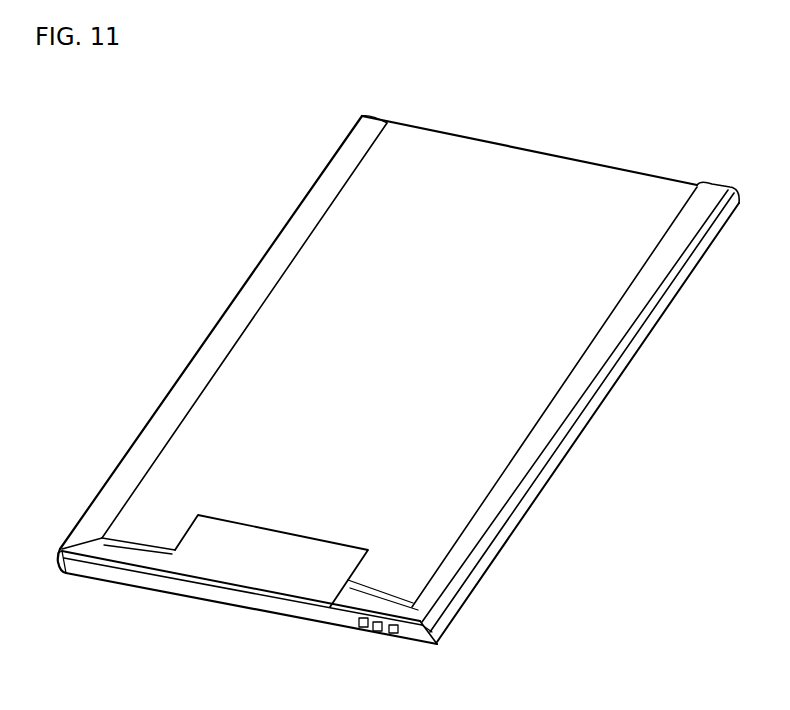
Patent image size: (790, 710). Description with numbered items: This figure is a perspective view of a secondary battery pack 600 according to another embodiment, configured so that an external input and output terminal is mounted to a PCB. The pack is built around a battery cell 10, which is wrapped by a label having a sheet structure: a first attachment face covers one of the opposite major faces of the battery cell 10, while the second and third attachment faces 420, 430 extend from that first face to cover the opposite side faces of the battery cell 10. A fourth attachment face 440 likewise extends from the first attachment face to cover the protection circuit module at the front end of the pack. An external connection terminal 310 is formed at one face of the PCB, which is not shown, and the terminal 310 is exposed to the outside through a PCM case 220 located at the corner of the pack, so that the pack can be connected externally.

The secondary battery pack 600 is at (127, 208).
The battery cell 10 is at (427, 378).
The third attachment face 430 is at (185, 370).
The second attachment face 420 is at (558, 428).
The fourth attachment face 440 is at (262, 570).
The external connection terminal 310 is at (373, 634).
The PCM case 220 is at (70, 577).